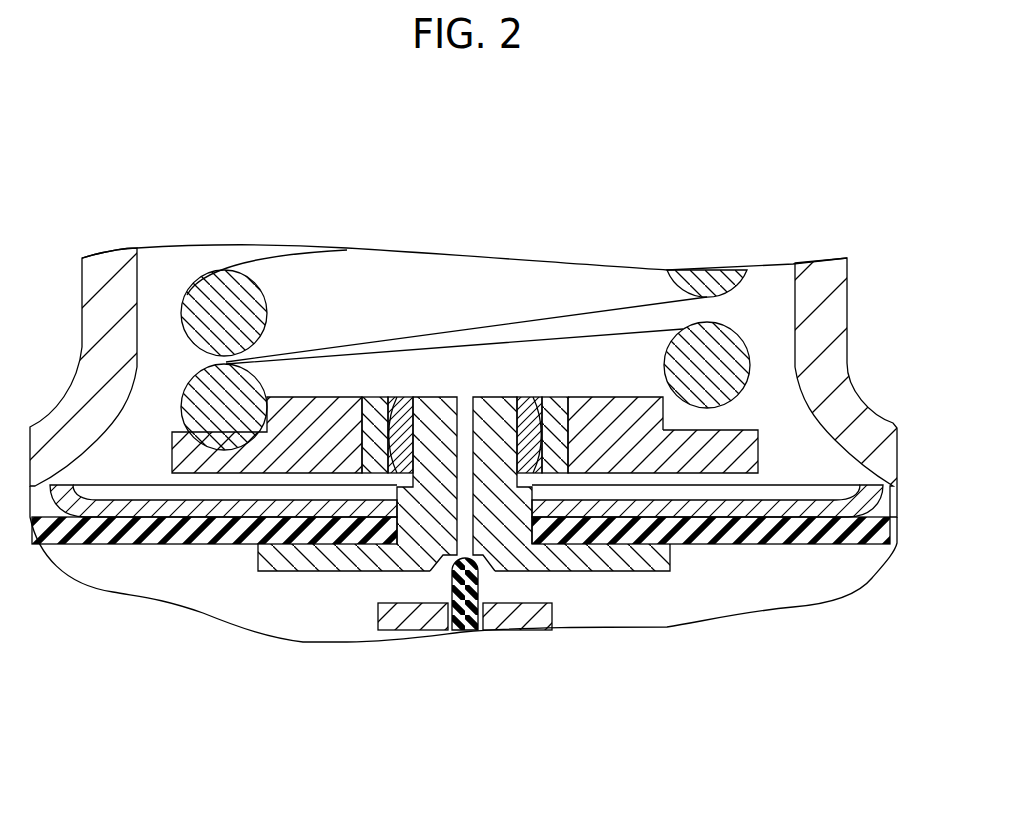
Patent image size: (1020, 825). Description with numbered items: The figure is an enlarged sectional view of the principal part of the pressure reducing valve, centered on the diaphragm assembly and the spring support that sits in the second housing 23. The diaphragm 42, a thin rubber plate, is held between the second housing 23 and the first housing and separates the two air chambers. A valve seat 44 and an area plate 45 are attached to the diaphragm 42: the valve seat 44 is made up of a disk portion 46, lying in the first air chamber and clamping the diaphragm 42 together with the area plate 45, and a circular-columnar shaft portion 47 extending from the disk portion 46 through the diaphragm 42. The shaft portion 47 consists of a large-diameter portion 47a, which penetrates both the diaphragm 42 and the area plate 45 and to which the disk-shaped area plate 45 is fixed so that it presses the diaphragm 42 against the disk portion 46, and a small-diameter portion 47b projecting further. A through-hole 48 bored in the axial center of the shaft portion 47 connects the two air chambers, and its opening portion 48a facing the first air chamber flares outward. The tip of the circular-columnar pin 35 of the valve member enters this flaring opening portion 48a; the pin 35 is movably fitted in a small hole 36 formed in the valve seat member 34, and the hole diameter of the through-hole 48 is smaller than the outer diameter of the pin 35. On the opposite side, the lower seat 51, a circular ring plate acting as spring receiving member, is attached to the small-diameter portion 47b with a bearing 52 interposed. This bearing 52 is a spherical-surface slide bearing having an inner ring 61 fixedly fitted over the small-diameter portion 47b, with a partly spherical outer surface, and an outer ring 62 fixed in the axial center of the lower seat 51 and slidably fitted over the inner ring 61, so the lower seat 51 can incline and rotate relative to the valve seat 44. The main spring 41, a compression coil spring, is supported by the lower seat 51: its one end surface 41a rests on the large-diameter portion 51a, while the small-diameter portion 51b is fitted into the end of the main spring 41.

The second housing 23 is at (82, 308).
The valve seat member 34 is at (552, 613).
The pin 35 is at (480, 588).
The small hole 36 is at (460, 630).
The main spring 41 is at (185, 292).
The one end surface of the main spring 41a is at (180, 450).
The diaphragm 42 is at (118, 545).
The valve seat 44 is at (434, 594).
The area plate 45 is at (773, 508).
The disk portion 46 is at (358, 567).
The shaft portion 47 is at (306, 574).
The large-diameter portion 47a is at (415, 445).
The small-diameter portion 47b is at (378, 448).
The through-hole 48 is at (458, 427).
The opening portion 48a is at (440, 567).
The lower seat 51 is at (663, 307).
The large-diameter portion 51a is at (725, 453).
The small-diameter portion 51b is at (645, 400).
The bearing 52 is at (536, 307).
The inner ring 61 is at (528, 410).
The outer ring 62 is at (558, 413).